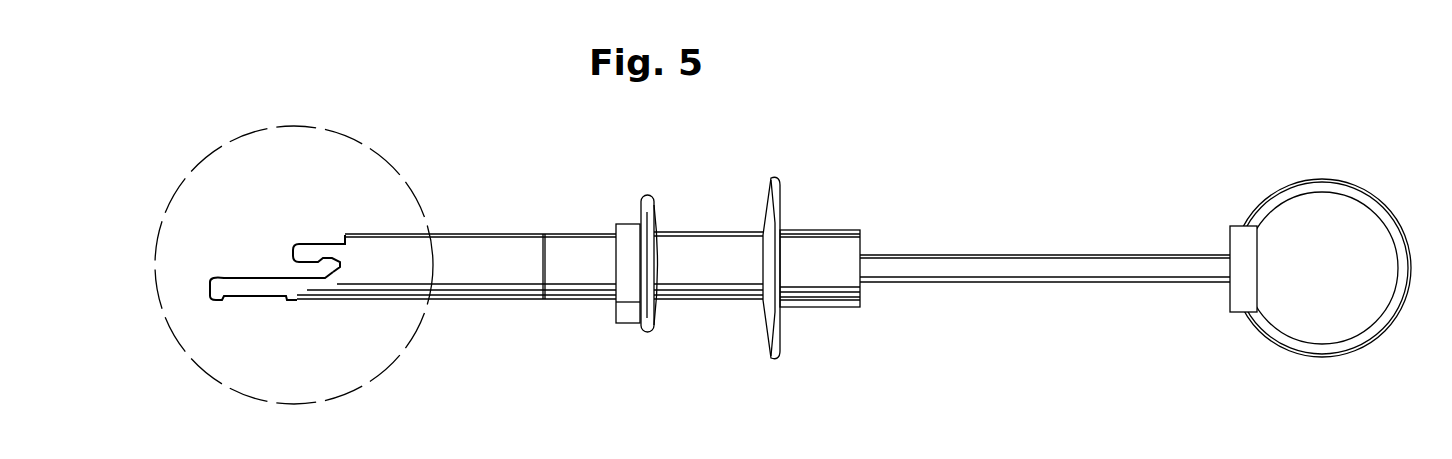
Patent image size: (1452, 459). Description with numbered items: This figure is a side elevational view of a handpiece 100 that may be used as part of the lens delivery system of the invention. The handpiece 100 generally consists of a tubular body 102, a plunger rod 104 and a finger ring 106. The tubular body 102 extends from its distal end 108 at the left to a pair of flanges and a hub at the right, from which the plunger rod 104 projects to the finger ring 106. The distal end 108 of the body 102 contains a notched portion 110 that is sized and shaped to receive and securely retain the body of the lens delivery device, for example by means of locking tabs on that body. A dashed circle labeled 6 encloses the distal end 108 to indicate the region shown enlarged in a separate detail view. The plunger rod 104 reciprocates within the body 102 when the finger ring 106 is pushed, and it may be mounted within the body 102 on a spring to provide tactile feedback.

The detail circle of FIG. 6 is at (350, 143).
The handpiece 100 is at (1015, 180).
The tubular body 102 is at (468, 234).
The plunger rod 104 is at (1060, 254).
The finger ring 106 is at (1288, 353).
The distal end 108 is at (294, 298).
The notched portion 110 is at (308, 270).